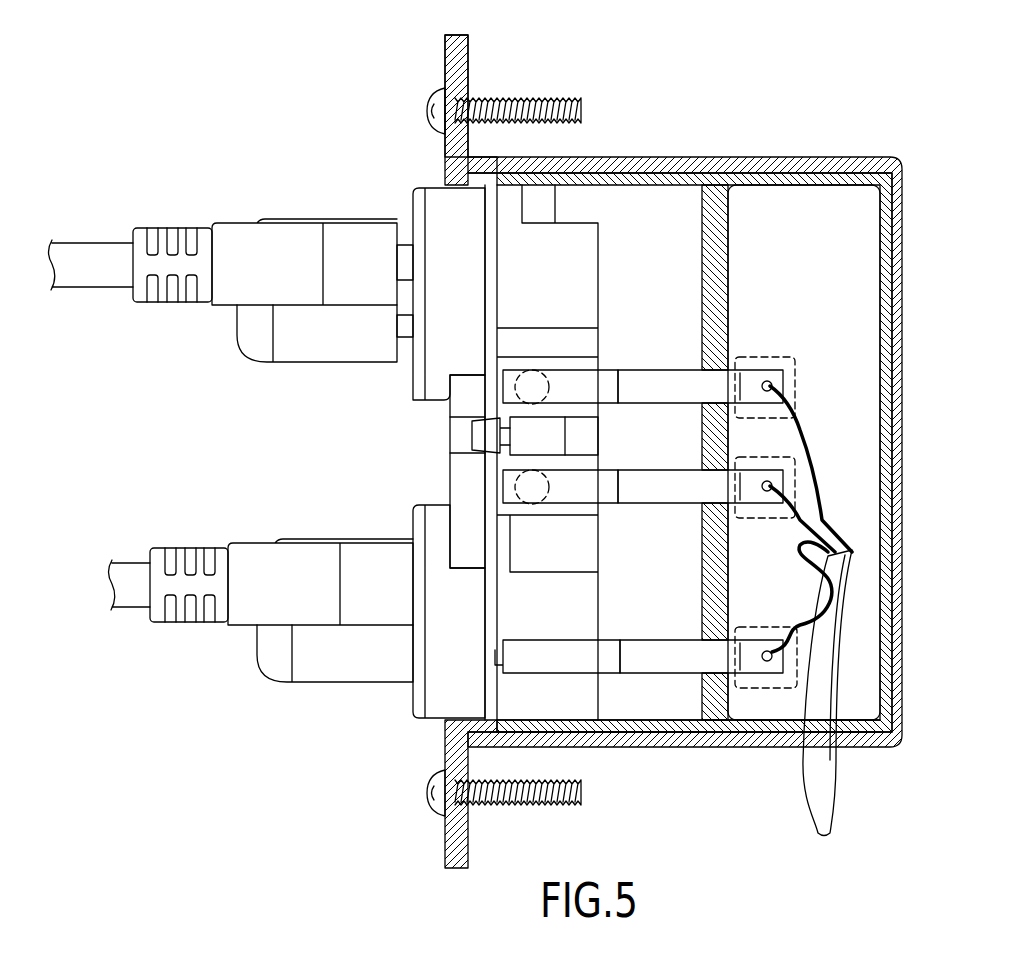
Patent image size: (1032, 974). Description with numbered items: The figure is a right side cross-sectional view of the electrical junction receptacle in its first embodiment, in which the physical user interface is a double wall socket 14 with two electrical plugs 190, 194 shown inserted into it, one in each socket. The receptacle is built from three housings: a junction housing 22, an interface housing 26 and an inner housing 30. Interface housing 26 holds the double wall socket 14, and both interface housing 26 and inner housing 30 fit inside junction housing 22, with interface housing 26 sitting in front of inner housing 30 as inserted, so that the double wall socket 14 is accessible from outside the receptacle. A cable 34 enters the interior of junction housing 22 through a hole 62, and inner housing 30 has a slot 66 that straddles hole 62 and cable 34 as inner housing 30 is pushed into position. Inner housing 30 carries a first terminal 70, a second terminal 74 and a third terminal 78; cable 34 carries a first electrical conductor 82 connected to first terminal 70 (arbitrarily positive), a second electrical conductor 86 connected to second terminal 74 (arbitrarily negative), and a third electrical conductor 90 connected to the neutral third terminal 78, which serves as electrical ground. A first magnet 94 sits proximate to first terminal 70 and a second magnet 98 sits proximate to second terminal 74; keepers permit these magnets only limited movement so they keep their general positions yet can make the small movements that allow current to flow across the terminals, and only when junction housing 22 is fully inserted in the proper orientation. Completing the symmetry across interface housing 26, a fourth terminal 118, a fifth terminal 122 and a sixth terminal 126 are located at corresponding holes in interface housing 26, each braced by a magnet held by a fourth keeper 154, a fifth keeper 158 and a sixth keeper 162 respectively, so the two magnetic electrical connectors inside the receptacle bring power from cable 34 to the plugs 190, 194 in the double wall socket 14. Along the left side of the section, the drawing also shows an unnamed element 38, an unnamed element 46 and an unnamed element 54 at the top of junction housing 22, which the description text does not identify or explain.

The double wall socket 14 is at (400, 506).
The junction housing 22 is at (812, 160).
The interface housing 26 is at (620, 187).
The inner housing 30 is at (815, 187).
The cable 34 is at (812, 778).
The mounting bracket 38 is at (446, 80).
The screw 46 is at (433, 126).
The bracket flange 54 is at (468, 48).
The hole 62 is at (736, 750).
The slot 66 is at (778, 722).
The first terminal 70 is at (760, 472).
The second terminal 74 is at (768, 378).
The third terminal 78 is at (760, 668).
The first electrical conductor 82 is at (812, 548).
The second electrical conductor 86 is at (815, 478).
The third electrical conductor 90 is at (810, 570).
The first magnet 94 is at (742, 520).
The second magnet 98 is at (746, 358).
The fourth terminal 118 is at (603, 488).
The fifth terminal 122 is at (658, 407).
The sixth terminal 126 is at (670, 652).
The fourth keeper 154 is at (690, 684).
The fifth keeper 158 is at (636, 370).
The sixth keeper 162 is at (645, 510).
The electrical plug 190 is at (236, 225).
The electrical plug 194 is at (238, 545).